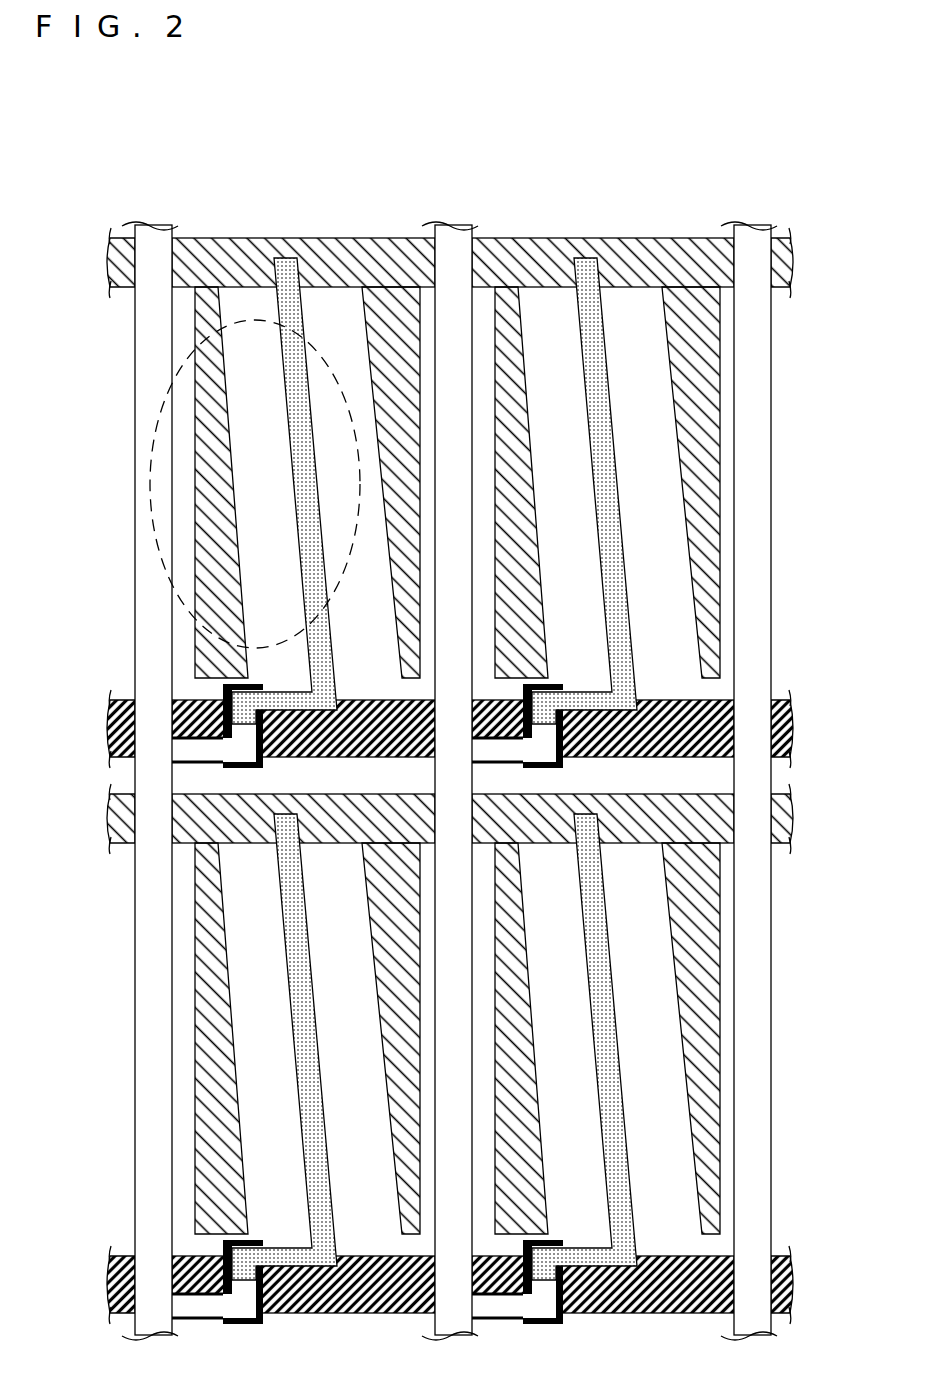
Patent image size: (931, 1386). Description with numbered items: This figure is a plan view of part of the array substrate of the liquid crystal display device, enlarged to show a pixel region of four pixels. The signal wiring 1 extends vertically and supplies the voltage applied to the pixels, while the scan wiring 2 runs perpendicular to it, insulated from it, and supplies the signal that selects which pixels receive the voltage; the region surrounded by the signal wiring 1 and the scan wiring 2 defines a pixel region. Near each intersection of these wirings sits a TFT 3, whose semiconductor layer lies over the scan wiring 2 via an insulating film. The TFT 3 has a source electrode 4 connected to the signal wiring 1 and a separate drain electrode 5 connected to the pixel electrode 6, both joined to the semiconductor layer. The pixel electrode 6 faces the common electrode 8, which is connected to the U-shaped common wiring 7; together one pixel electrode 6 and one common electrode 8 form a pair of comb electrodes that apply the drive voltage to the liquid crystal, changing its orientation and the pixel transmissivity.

The signal wiring 1 is at (153, 613).
The scan wiring 2 is at (787, 728).
The TFT 3 is at (222, 692).
The source electrode 4 is at (208, 752).
The drain electrode 5 is at (557, 690).
The pixel electrode 6 is at (615, 463).
The common wiring 7 is at (700, 820).
The common electrode 8 is at (720, 357).